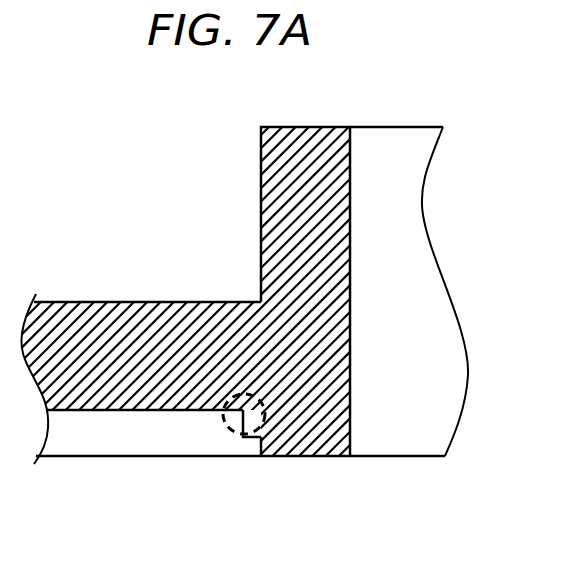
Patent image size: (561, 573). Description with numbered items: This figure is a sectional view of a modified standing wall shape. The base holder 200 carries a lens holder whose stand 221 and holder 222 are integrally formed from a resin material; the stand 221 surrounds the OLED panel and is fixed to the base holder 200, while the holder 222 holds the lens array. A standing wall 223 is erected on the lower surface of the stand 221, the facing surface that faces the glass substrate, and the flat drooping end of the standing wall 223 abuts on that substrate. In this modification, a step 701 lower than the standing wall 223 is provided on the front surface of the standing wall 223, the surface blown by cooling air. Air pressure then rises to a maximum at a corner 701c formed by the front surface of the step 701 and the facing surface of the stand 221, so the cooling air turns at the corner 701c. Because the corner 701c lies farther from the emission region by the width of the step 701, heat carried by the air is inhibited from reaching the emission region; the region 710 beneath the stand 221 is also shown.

The base holder 200 is at (121, 212).
The stand 221 is at (118, 301).
The holder 222 is at (261, 141).
The standing wall 223 is at (305, 464).
The step 701 is at (248, 438).
The corner 701c is at (225, 428).
The cavity 710 is at (105, 419).